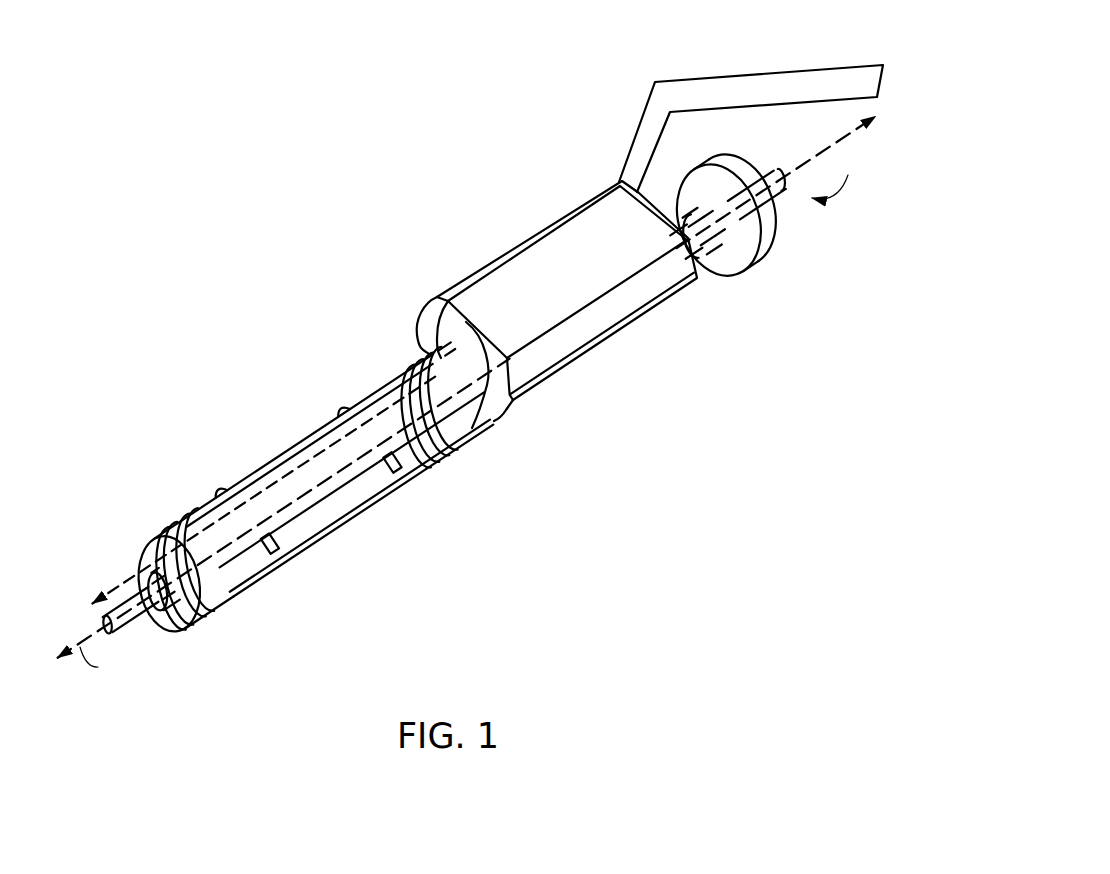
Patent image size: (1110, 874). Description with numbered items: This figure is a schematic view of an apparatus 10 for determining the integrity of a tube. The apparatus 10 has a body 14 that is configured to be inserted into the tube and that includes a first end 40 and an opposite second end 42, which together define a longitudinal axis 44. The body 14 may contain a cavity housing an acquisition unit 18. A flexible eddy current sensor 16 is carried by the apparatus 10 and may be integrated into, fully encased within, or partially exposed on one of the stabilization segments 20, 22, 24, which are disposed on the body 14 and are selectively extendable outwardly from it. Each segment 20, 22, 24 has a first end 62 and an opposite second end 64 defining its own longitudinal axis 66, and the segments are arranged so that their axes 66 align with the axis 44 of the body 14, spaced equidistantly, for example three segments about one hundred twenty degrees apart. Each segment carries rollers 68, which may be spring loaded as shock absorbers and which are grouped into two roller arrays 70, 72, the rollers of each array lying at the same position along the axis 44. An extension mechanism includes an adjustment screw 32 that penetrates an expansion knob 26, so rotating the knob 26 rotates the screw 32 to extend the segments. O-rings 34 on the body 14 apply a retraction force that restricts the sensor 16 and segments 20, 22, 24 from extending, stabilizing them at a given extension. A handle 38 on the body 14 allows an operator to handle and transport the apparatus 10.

The apparatus 10 is at (222, 203).
The body 14 is at (604, 328).
The flexible eddy current sensor 16 is at (468, 347).
The acquisition unit 18 is at (538, 257).
The stabilization segment 20 is at (160, 552).
The stabilization segment 22 is at (192, 598).
The stabilization segment 24 is at (178, 620).
The expansion knob 26 is at (721, 172).
The adjustment screw 32 is at (767, 176).
The O-rings 34 is at (222, 582).
The handle 38 is at (627, 146).
The first end 40 is at (63, 610).
The second end 42 is at (843, 173).
The longitudinal axis 44 is at (100, 671).
The first end 62 is at (156, 526).
The second end 64 is at (399, 353).
The longitudinal axis 66 is at (112, 582).
The rollers 68 is at (403, 470).
The roller array 70 is at (212, 485).
The roller array 72 is at (337, 411).